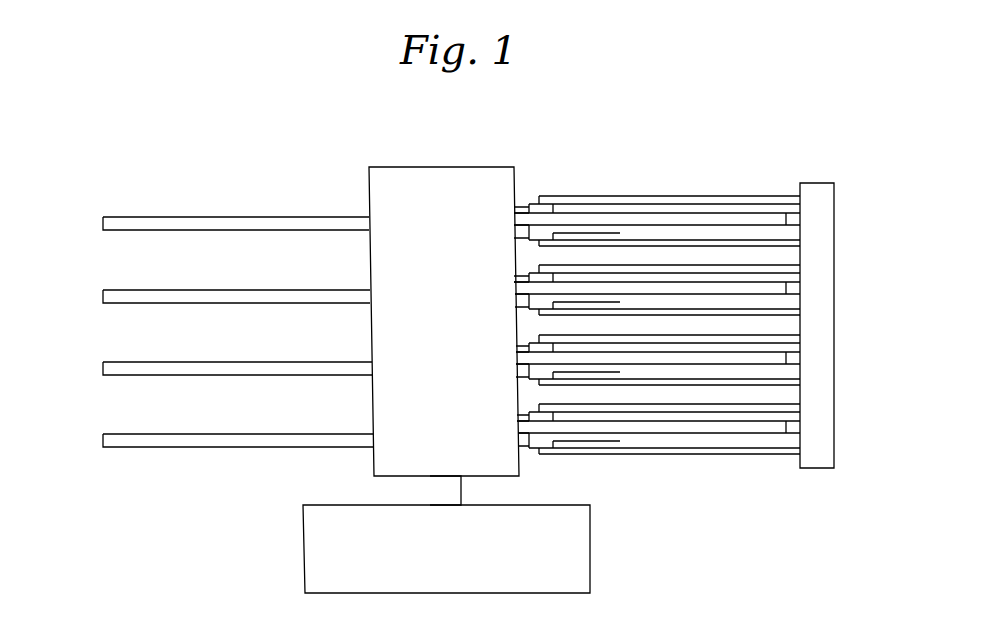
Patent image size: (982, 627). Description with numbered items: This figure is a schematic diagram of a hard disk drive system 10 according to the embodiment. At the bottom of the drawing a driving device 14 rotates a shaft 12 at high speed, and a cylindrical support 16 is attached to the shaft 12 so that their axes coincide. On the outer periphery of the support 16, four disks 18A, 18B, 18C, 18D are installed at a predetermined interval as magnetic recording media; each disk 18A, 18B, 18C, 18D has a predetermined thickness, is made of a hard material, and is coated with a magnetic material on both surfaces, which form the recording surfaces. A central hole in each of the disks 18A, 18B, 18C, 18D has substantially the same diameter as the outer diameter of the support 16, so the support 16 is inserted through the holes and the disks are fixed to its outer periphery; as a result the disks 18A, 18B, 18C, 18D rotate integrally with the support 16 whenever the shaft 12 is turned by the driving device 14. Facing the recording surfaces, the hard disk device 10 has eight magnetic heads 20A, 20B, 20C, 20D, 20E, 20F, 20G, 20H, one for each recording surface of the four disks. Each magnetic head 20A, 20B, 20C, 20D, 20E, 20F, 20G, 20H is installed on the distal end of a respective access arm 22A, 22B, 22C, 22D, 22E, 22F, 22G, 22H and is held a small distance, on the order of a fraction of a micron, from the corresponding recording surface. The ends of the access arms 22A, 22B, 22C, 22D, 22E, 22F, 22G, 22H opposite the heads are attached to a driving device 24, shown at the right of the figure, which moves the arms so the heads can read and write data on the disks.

The hard disk drive system 10 is at (198, 198).
The shaft 12 is at (461, 490).
The driving device 14 is at (590, 532).
The cylindrical support 16 is at (497, 167).
The disk 18A is at (103, 218).
The disk 18B is at (103, 291).
The disk 18C is at (103, 363).
The disk 18D is at (103, 436).
The magnetic head 20A is at (514, 207).
The magnetic head 20B is at (514, 238).
The magnetic head 20C is at (514, 276).
The magnetic head 20D is at (515, 307).
The magnetic head 20E is at (516, 346).
The magnetic head 20F is at (516, 377).
The magnetic head 20G is at (517, 415).
The magnetic head 20H is at (518, 446).
The access arm 22A is at (640, 196).
The access arm 22B is at (647, 241).
The access arm 22C is at (719, 254).
The access arm 22D is at (667, 311).
The access arm 22E is at (706, 323).
The access arm 22F is at (688, 380).
The access arm 22G is at (726, 394).
The access arm 22H is at (688, 455).
The driving device 24 is at (834, 262).